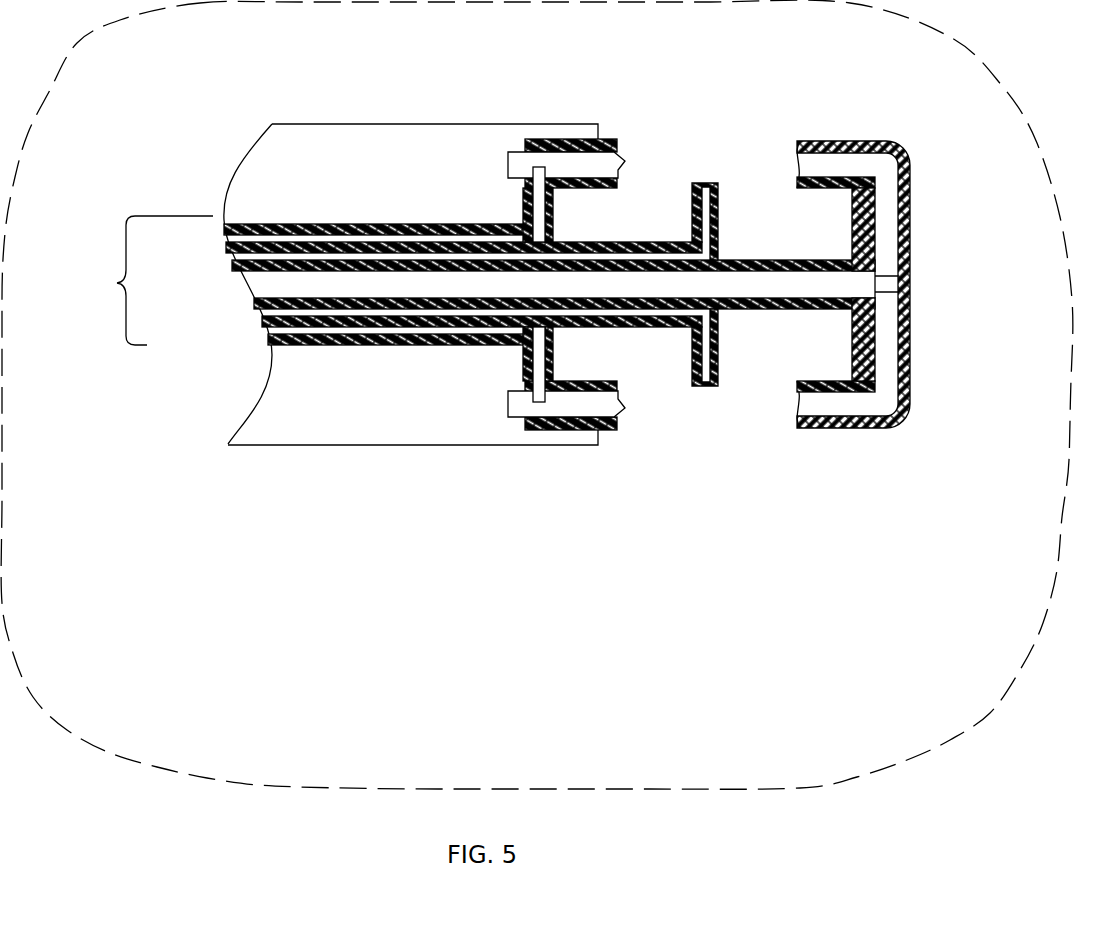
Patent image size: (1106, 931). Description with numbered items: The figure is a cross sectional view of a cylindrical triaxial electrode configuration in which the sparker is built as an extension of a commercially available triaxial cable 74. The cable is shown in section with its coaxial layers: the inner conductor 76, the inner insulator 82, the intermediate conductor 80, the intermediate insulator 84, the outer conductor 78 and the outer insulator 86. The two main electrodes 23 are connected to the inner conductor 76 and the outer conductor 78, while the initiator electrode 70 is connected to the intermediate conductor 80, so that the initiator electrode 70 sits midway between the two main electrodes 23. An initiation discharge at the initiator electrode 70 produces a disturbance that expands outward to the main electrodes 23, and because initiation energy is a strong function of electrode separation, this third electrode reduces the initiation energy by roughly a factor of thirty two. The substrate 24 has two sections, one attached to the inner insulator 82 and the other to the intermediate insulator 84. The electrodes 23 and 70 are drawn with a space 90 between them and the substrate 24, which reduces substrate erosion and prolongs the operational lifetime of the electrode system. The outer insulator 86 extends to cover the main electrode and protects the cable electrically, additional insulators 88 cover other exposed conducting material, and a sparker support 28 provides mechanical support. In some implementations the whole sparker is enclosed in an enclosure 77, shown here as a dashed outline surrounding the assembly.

The main electrode 23 is at (622, 158).
The substrate 24 is at (513, 465).
The sparker support 28 is at (361, 124).
The initiator electrode 70 is at (705, 184).
The triaxial cable 74 is at (149, 280).
The inner conductor 76 is at (357, 283).
The enclosure 77 is at (1004, 86).
The outer conductor 78 is at (265, 332).
The intermediate conductor 80 is at (257, 312).
The inner insulator 82 is at (254, 302).
The intermediate insulator 84 is at (261, 322).
The outer insulator 86 is at (270, 342).
The additional insulator 88 is at (852, 212).
The space 90 is at (597, 358).